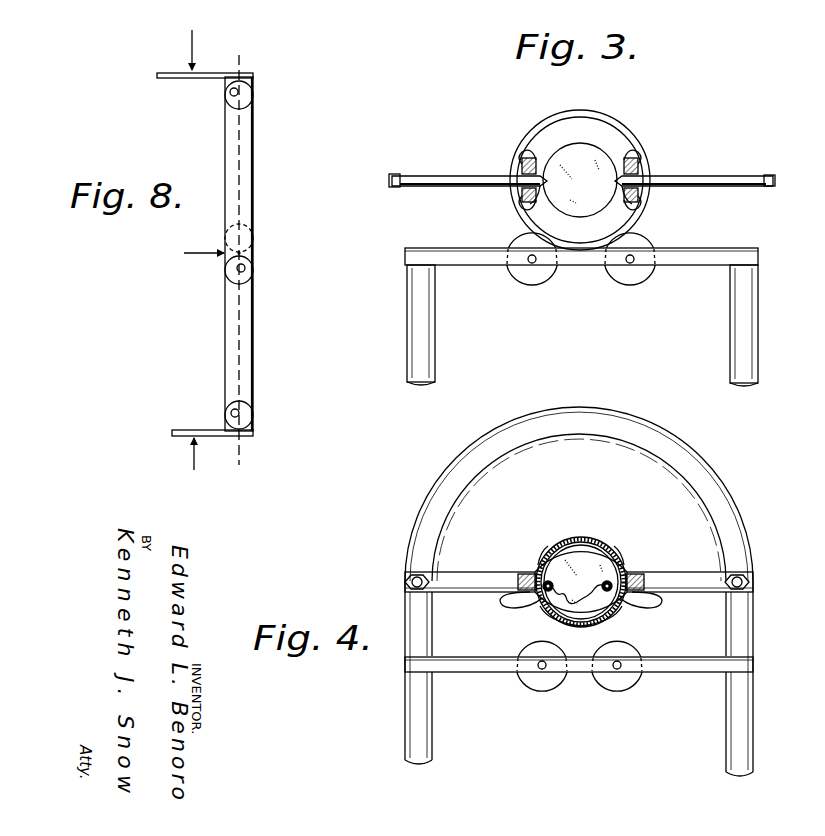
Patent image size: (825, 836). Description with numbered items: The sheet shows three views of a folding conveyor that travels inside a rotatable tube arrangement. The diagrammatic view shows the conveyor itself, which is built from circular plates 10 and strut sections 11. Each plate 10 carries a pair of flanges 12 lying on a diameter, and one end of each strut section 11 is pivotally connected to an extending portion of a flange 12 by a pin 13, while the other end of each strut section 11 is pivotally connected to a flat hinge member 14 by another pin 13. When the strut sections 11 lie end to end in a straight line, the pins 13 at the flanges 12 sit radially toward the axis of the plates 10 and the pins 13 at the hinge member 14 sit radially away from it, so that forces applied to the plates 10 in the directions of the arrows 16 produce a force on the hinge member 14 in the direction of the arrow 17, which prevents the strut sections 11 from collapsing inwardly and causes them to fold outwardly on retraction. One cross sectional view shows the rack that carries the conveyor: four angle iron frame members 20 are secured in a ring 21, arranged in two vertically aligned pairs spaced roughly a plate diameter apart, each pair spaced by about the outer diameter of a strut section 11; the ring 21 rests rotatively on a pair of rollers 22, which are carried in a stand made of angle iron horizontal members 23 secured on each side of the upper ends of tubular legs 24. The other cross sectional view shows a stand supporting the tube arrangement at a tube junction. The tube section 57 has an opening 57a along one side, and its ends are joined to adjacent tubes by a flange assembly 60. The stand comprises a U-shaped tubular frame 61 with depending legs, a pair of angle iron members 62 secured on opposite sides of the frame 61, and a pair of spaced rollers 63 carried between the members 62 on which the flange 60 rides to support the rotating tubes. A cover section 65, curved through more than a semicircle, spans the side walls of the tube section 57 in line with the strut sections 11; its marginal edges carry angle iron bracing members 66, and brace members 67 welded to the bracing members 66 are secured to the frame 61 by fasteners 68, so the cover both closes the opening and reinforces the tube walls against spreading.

In FIG. 8, the circular plate 10 is at (168, 78).
In FIG. 3, the circular plate 10 is at (584, 145).
In FIG. 4, the circular plate 10 is at (585, 550).
In FIG. 8, the strut section 11 is at (225, 165).
In FIG. 3, the strut section 11 is at (440, 176).
In FIG. 4, the strut section 11 is at (577, 599).
In FIG. 8, the flange 12 is at (254, 80).
In FIG. 3, the flange 12 is at (536, 204).
In FIG. 8, the pin 13 is at (240, 98).
In FIG. 3, the pin 13 is at (396, 175).
In FIG. 8, the hinge member 14 is at (254, 253).
In FIG. 3, the hinge member 14 is at (392, 186).
In FIG. 8, the arrow 16 is at (192, 45).
In FIG. 8, the arrow 17 is at (190, 253).
In FIG. 3, the frame member 20 is at (524, 158).
In FIG. 3, the ring 21 is at (541, 126).
In FIG. 3, the roller 22 is at (533, 286).
In FIG. 3, the horizontal member 23 is at (716, 249).
In FIG. 3, the leg 24 is at (435, 344).
In FIG. 4, the tube section 57 is at (545, 610).
In FIG. 4, the opening 57a is at (547, 546).
In FIG. 4, the flange assembly 60 is at (526, 560).
In FIG. 4, the tubular frame 61 is at (430, 492).
In FIG. 4, the member 62 is at (680, 657).
In FIG. 4, the roller 63 is at (520, 680).
In FIG. 4, the cover section 65 is at (570, 538).
In FIG. 4, the bracing member 66 is at (505, 572).
In FIG. 4, the brace member 67 is at (452, 593).
In FIG. 4, the fastener 68 is at (410, 580).